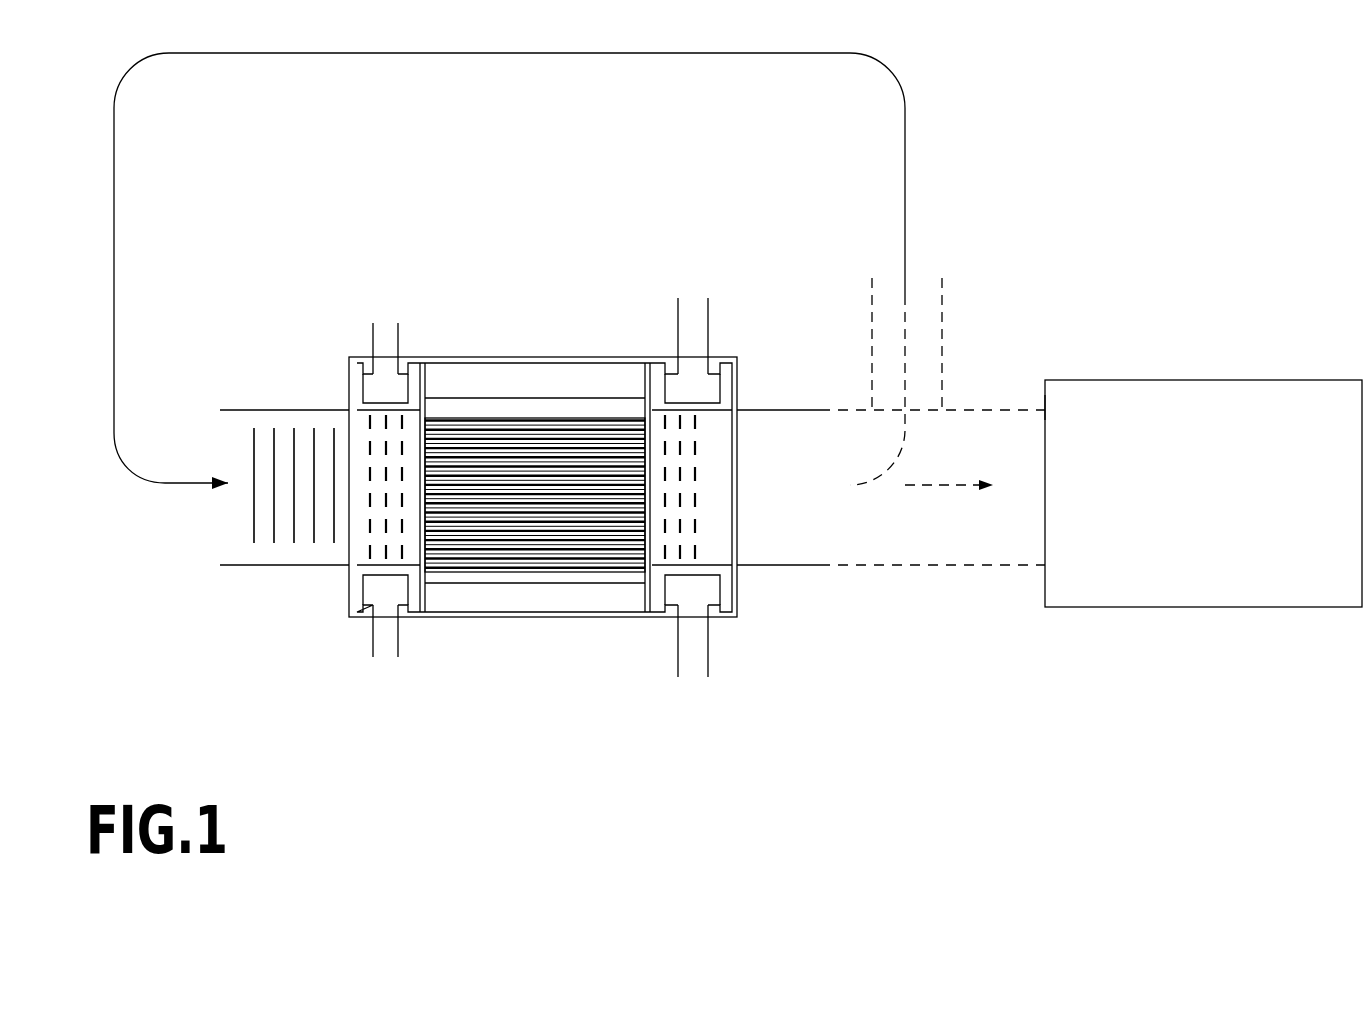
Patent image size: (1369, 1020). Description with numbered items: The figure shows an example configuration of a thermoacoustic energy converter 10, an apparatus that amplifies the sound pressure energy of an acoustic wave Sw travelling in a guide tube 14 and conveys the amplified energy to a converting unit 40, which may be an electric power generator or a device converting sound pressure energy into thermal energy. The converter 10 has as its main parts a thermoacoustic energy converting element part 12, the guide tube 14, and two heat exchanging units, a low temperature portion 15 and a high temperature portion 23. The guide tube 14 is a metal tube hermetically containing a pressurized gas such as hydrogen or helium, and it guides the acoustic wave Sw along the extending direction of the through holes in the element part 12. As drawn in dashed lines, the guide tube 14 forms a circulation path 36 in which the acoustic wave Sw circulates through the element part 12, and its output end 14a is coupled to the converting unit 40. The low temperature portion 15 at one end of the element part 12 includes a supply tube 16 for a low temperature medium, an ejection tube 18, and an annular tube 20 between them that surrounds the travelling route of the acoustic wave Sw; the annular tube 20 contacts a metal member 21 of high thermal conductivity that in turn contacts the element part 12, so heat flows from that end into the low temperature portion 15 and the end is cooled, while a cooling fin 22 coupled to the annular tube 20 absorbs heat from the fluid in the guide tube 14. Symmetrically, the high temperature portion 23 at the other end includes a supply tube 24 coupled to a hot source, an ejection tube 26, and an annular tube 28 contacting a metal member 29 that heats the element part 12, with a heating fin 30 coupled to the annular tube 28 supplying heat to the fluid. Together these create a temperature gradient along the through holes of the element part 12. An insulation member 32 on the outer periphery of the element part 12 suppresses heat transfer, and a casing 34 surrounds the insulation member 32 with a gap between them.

The thermoacoustic energy converter 10 is at (622, 722).
The thermoacoustic energy converting element part 12 is at (580, 560).
The guide tube 14 is at (232, 568).
The output end 14a is at (1045, 408).
The heat exchanging unit (low temperature portion) 15 is at (322, 598).
The supply tube 16 is at (383, 323).
The ejection tube 18 is at (380, 660).
The annular tube 20 is at (370, 388).
The metal member 21 is at (423, 366).
The cooling fin 22 is at (380, 545).
The heat exchanging unit (high temperature portion) 23 is at (762, 636).
The supply tube 24 is at (692, 322).
The ejection tube 26 is at (693, 655).
The annular tube 28 is at (695, 385).
The metal member 29 is at (650, 372).
The heating fin 30 is at (718, 595).
The insulation member 32 is at (596, 410).
The casing 34 is at (510, 357).
The circulation path 36 is at (905, 118).
The converting unit 40 is at (1205, 380).
The acoustic wave Sw is at (258, 500).